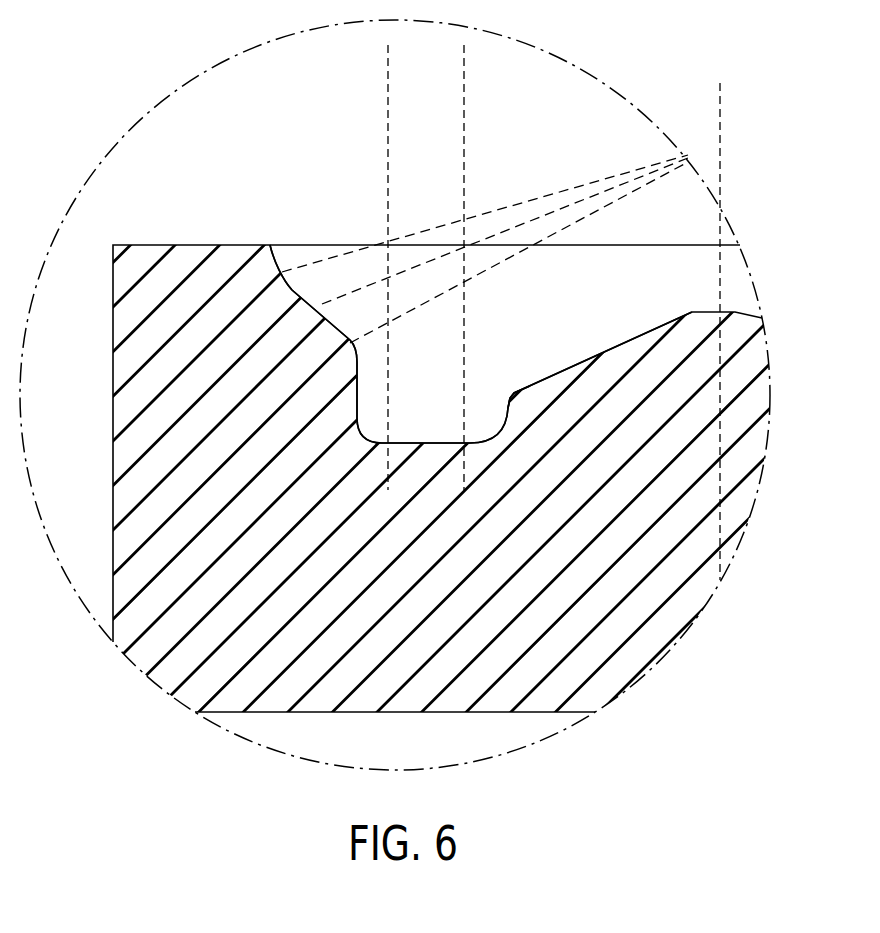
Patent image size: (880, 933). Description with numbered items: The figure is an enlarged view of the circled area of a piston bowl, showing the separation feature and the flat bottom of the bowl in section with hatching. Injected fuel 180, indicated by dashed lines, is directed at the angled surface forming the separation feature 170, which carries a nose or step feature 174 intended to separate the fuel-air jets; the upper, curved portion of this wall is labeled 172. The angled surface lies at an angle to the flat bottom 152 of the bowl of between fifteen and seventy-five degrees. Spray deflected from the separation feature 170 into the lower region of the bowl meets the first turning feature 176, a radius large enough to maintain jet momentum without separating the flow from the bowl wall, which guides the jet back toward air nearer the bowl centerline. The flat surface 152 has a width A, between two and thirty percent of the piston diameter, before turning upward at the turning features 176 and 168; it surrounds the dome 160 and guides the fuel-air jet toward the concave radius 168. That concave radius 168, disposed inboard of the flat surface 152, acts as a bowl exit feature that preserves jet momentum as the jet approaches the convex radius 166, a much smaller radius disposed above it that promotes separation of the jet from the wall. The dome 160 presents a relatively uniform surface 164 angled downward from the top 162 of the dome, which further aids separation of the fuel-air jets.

The flat bottom of the bowl 152 is at (462, 457).
The dome 160 is at (576, 342).
The top of the dome 162 is at (734, 310).
The angled surface of the dome 164 is at (697, 322).
The convex radius 166 is at (510, 410).
The concave radius 168 is at (518, 412).
The separation feature 170 is at (266, 274).
The upper curved wall portion 172 is at (248, 249).
The nose or step feature 174 is at (359, 352).
The first turning feature 176 is at (347, 398).
The injected fuel 180 is at (556, 188).
The width of the flat surface A is at (462, 152).